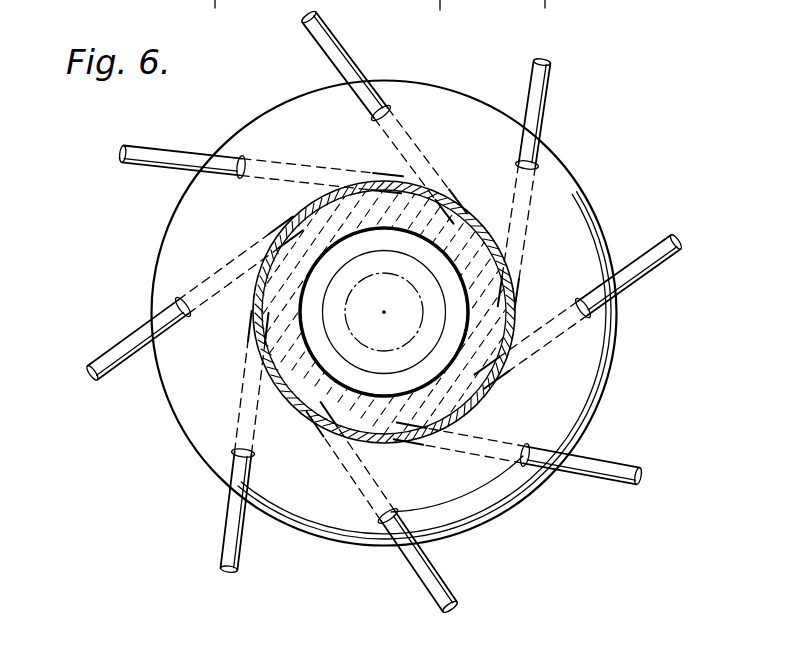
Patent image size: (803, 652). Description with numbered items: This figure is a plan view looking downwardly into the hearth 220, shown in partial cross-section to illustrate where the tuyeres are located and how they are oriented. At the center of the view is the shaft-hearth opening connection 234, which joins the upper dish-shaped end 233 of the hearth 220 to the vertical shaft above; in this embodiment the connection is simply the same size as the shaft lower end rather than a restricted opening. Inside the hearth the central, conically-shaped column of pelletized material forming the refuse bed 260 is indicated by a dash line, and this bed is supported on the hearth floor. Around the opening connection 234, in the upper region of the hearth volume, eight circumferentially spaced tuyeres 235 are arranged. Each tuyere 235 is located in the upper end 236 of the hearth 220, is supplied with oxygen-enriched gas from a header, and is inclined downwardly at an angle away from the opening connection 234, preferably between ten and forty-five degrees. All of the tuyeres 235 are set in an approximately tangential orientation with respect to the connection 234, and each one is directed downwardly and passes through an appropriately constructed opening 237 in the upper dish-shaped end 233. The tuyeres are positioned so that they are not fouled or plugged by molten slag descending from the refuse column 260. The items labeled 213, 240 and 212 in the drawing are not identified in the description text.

The hearth 220 is at (613, 352).
The upper dish-shaped end 233 is at (585, 222).
The tuyeres 235 is at (338, 42).
The opening 237 is at (395, 108).
The hatched ring 213 is at (510, 288).
The ring hatching 240 is at (301, 212).
The annular member 212 is at (463, 199).
The upper end 236 is at (477, 307).
The shaft-hearth opening connection 234 is at (319, 326).
The refuse bed 260 is at (389, 270).